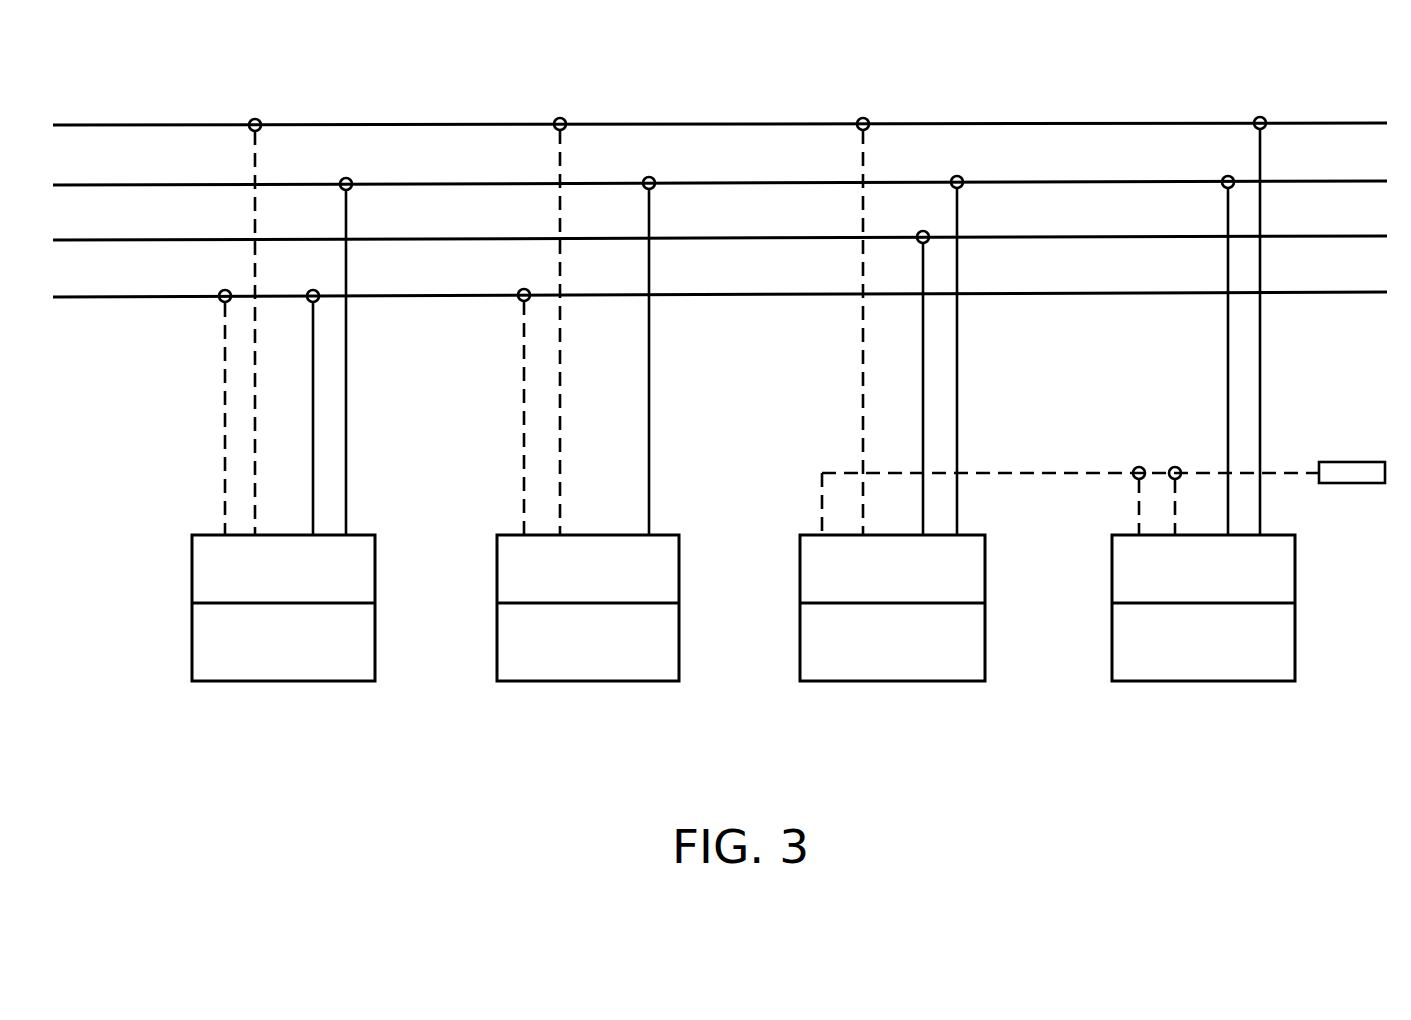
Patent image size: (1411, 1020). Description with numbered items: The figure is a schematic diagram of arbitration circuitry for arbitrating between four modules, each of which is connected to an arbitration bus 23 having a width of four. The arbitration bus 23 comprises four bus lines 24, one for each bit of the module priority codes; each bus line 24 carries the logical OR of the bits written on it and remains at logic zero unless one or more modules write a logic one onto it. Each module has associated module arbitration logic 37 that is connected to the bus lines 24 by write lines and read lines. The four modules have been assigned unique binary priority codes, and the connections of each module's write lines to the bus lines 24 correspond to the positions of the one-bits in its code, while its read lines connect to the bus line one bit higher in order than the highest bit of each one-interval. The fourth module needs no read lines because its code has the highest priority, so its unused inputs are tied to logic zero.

The arbitration bus 23 is at (720, 158).
The bus lines 24 is at (1296, 127).
The module arbitration logic 37 is at (238, 588).